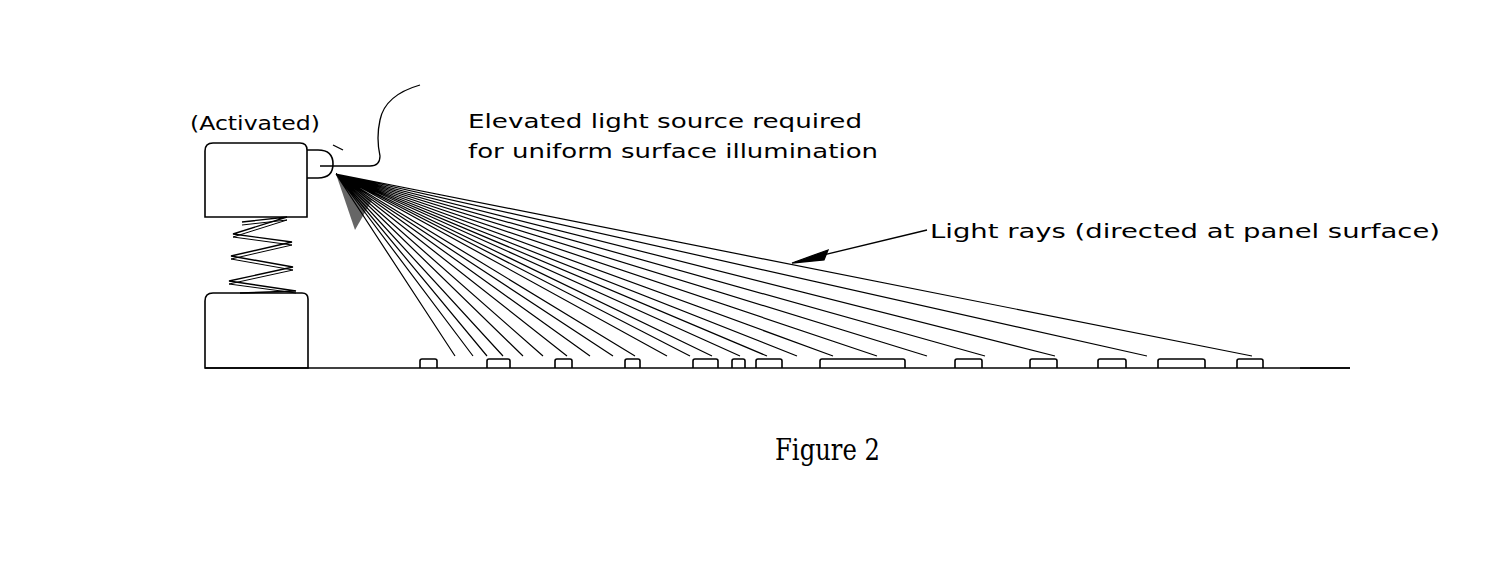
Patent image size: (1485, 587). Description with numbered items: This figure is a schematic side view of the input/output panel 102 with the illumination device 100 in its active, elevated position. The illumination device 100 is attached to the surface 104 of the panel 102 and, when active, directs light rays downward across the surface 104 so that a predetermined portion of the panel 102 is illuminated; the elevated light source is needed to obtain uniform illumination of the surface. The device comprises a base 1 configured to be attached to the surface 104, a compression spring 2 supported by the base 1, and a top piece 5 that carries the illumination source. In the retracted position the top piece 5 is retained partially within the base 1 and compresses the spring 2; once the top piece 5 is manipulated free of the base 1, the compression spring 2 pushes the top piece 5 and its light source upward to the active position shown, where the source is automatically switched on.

The base 1 is at (230, 330).
The compression spring 2 is at (230, 272).
The top piece 5 is at (215, 172).
The illumination device 100 is at (331, 126).
The input/output panel 102 is at (1328, 366).
The surface of the input/output panel 104 is at (355, 368).